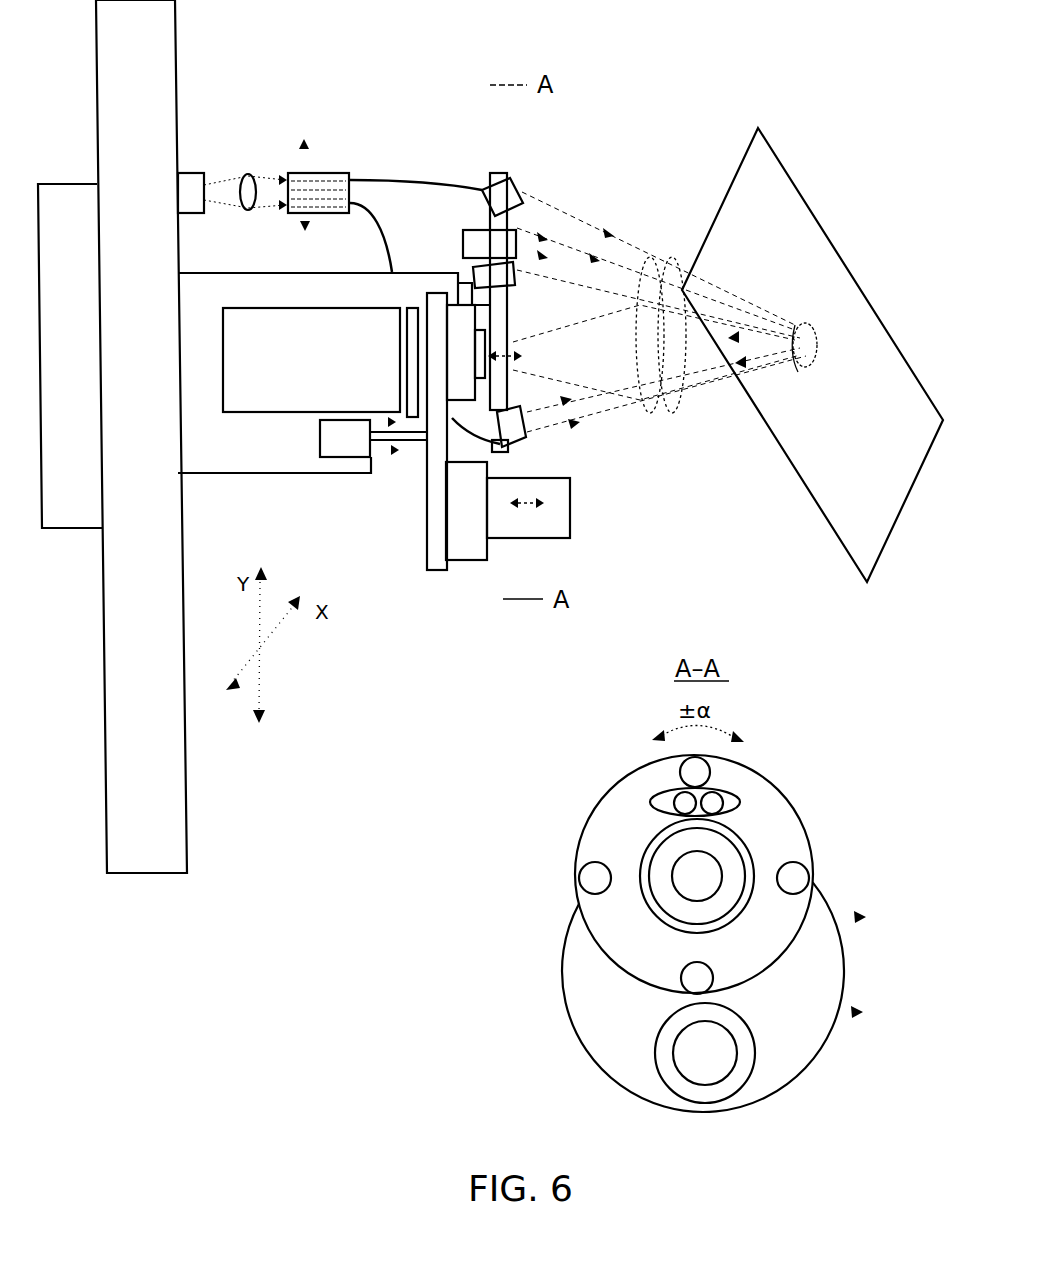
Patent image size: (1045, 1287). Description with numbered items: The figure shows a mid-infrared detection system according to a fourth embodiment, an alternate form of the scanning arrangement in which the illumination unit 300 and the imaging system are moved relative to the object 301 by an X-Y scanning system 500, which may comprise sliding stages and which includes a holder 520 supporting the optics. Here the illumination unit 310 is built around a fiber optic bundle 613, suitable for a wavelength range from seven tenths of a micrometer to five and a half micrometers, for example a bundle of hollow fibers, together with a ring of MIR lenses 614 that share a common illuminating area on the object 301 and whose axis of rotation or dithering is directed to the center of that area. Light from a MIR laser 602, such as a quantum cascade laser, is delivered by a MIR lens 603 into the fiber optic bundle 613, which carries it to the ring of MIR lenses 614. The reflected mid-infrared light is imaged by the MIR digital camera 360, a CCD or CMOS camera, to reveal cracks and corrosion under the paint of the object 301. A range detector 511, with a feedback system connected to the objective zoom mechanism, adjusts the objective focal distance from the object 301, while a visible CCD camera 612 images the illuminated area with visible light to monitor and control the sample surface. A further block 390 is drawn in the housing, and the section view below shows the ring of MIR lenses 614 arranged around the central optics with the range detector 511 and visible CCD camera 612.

The MIR illumination unit 300 is at (580, 176).
The object 301 is at (847, 307).
The illumination unit 310 is at (330, 137).
The MIR digital camera 360 is at (311, 360).
The actuator 390 is at (373, 437).
The X-Y scanning system 500 is at (141, 436).
The holder 520 is at (264, 356).
The range detector 511 is at (463, 240).
The MIR laser 602 is at (193, 172).
The MIR lens 603 is at (246, 212).
The visible CCD camera 612 is at (515, 283).
The fiber optic bundle 613 is at (330, 172).
The ring of MIR lenses 614 is at (510, 182).